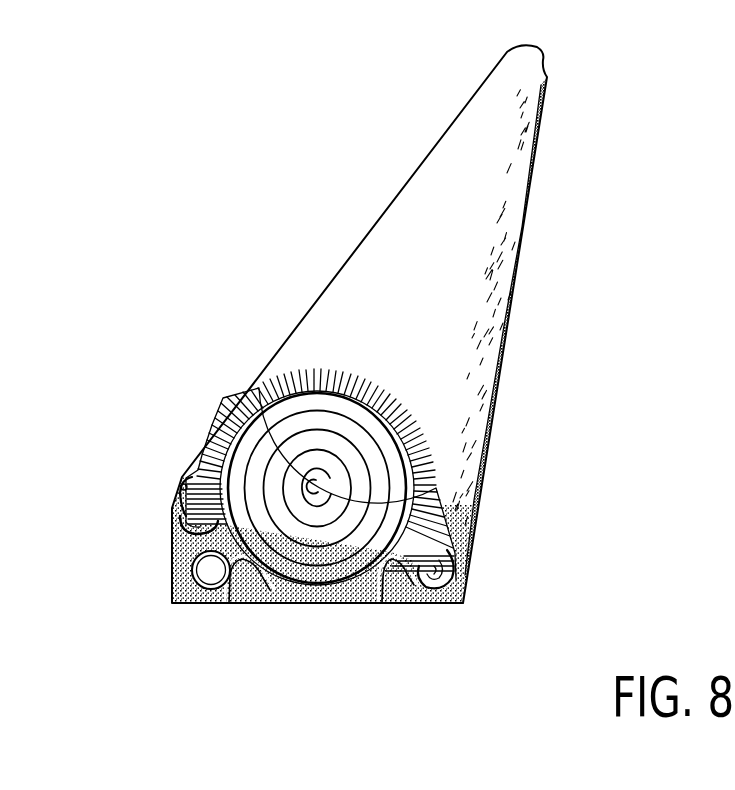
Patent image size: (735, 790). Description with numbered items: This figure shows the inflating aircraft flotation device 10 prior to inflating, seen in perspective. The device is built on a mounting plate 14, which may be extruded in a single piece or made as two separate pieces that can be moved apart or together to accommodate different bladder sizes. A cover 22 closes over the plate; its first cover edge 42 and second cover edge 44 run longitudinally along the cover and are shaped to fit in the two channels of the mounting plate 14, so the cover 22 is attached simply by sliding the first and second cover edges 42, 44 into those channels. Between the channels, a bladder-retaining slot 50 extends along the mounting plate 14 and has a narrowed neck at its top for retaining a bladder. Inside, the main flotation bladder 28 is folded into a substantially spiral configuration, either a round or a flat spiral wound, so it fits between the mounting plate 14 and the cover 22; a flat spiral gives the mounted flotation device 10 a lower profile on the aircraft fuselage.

The flotation device 10 is at (663, 158).
The mounting plate 14 is at (482, 473).
The cover 22 is at (440, 292).
The main flotation bladder 28 is at (318, 560).
The first cover edge 42 is at (170, 508).
The second cover edge 44 is at (468, 572).
The bladder-retaining slot 50 is at (231, 605).